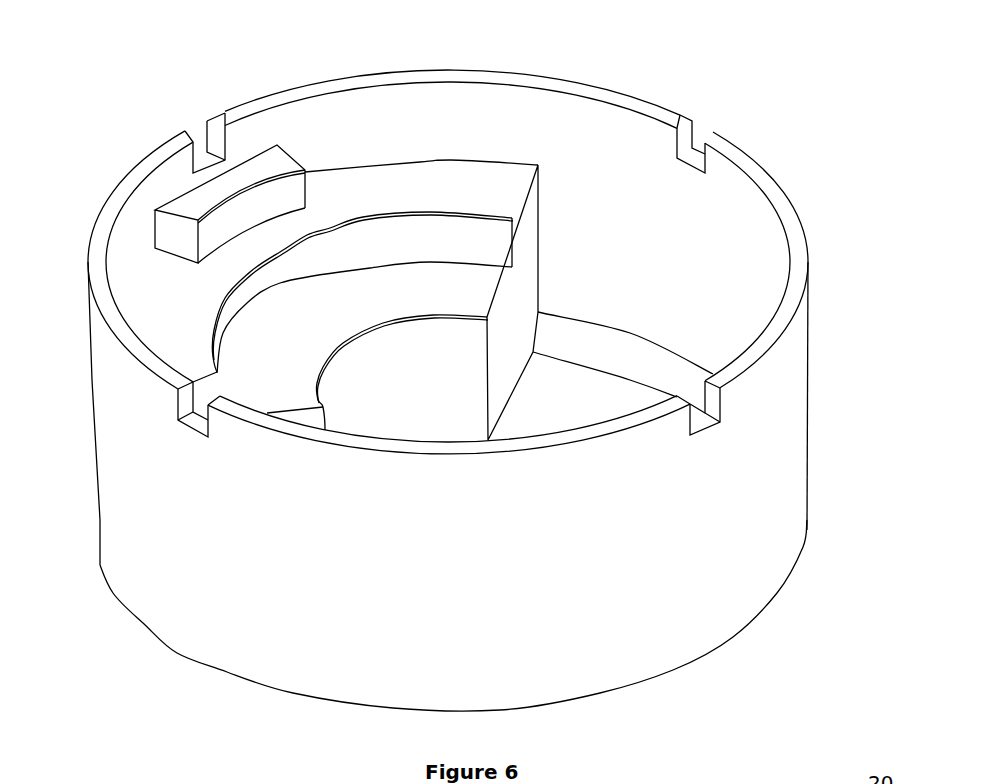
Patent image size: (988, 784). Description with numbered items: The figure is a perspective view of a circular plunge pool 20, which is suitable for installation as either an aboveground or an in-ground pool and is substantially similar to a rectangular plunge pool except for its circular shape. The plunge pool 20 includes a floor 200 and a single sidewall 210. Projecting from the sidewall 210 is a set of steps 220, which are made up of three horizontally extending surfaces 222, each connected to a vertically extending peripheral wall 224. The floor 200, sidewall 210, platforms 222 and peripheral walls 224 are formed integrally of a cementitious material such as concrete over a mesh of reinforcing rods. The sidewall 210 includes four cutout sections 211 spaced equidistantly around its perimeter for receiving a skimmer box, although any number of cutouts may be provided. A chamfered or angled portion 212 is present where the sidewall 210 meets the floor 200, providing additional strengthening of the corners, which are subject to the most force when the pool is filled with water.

The circular plunge pool 20 is at (813, 113).
The floor 200 is at (595, 398).
The sidewall 210 is at (755, 268).
The cutout sections 211 is at (193, 127).
The chamfered or angled portion 212 is at (618, 340).
The set of steps 220 is at (378, 143).
The horizontally extending surfaces 222 is at (232, 182).
The vertically extending peripheral wall 224 is at (338, 383).